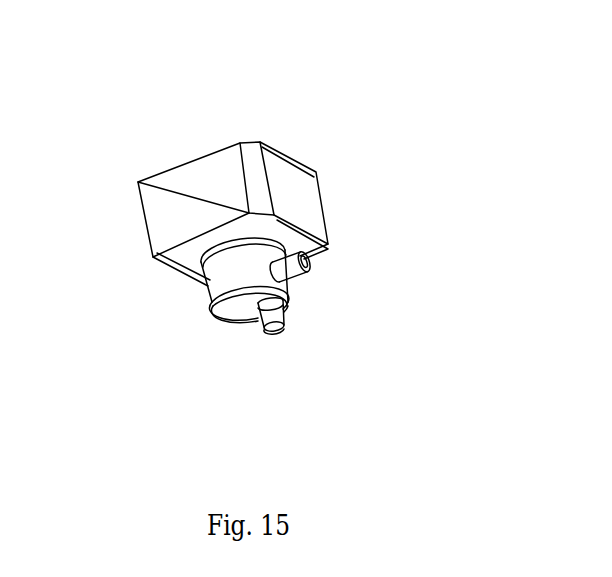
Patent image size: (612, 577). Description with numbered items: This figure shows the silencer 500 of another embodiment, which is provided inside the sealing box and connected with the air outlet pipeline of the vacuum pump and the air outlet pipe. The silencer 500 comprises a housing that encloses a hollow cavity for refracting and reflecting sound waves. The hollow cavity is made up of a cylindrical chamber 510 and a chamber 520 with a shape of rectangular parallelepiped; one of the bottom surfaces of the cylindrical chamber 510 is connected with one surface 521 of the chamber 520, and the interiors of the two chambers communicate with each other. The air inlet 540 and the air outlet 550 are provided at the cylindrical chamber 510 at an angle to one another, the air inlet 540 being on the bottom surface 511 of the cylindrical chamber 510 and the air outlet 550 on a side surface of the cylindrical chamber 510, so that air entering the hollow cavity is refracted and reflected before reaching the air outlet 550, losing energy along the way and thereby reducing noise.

The silencer 500 is at (377, 95).
The cylindrical chamber 510 is at (211, 303).
The bottom surface of the cylindrical chamber 511 is at (230, 320).
The chamber with a shape of rectangular parallelepiped 520 is at (195, 158).
The surface of the chamber with a shape of rectangular parallelepiped 521 is at (181, 256).
The air inlet 540 is at (275, 330).
The air outlet 550 is at (317, 259).